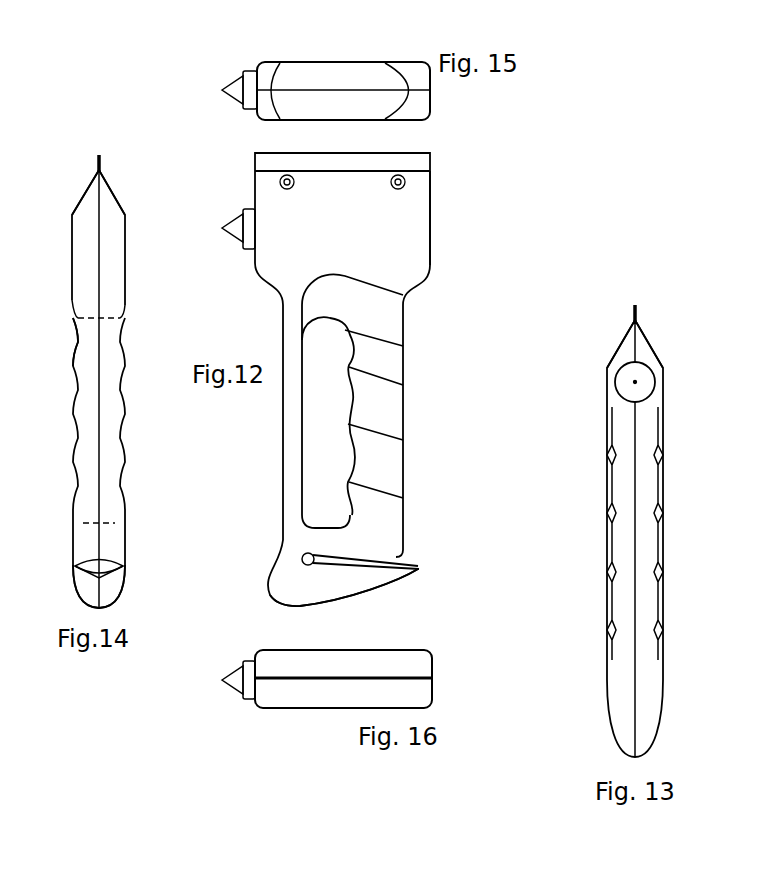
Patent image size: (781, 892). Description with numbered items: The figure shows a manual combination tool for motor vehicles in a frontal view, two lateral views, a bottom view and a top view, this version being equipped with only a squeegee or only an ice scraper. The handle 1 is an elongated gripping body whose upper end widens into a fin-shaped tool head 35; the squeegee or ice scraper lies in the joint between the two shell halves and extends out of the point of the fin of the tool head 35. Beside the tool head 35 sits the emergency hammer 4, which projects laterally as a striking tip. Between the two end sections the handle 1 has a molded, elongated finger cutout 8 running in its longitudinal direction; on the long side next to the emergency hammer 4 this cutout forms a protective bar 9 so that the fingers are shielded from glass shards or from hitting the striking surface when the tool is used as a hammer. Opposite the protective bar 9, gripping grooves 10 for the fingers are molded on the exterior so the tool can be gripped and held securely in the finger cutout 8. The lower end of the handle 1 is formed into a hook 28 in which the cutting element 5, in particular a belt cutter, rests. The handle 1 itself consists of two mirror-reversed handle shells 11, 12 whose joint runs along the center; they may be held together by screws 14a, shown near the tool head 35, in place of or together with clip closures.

In FIG. 12, the handle 1 is at (406, 462).
In FIG. 14, the handle 1 is at (103, 452).
In FIG. 13, the handle 1 is at (662, 618).
In FIG. 15, the emergency hammer 4 is at (243, 82).
In FIG. 12, the emergency hammer 4 is at (242, 222).
In FIG. 13, the emergency hammer 4 is at (648, 382).
In FIG. 16, the emergency hammer 4 is at (241, 668).
In FIG. 12, the cutting element 5 is at (400, 563).
In FIG. 14, the cutting element 5 is at (106, 565).
In FIG. 12, the finger cutout 8 is at (325, 448).
In FIG. 14, the finger cutout 8 is at (104, 520).
In FIG. 12, the protective bar 9 is at (293, 420).
In FIG. 14, the gripping grooves 10 is at (70, 318).
In FIG. 13, the handle shell 11 is at (622, 531).
In FIG. 13, the handle shell 12 is at (645, 520).
In FIG. 12, the screws 14a is at (393, 188).
In FIG. 15, the hook 28 is at (330, 76).
In FIG. 12, the hook 28 is at (292, 585).
In FIG. 14, the hook 28 is at (112, 590).
In FIG. 12, the tool head 35 is at (400, 218).
In FIG. 14, the tool head 35 is at (108, 200).
In FIG. 13, the tool head 35 is at (625, 348).
In FIG. 16, the tool head 35 is at (293, 664).